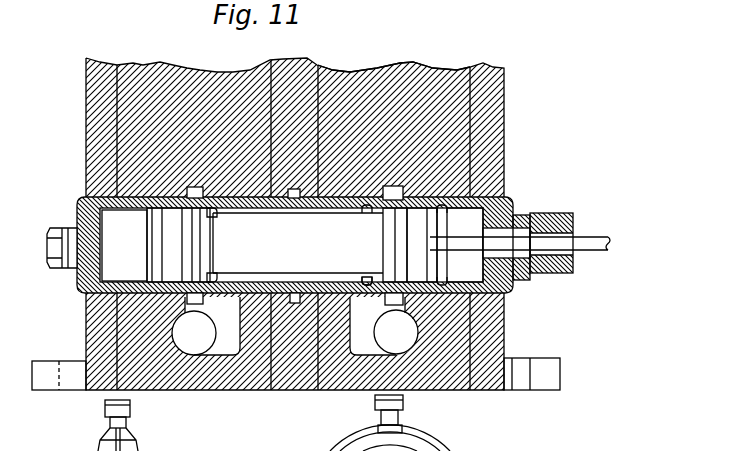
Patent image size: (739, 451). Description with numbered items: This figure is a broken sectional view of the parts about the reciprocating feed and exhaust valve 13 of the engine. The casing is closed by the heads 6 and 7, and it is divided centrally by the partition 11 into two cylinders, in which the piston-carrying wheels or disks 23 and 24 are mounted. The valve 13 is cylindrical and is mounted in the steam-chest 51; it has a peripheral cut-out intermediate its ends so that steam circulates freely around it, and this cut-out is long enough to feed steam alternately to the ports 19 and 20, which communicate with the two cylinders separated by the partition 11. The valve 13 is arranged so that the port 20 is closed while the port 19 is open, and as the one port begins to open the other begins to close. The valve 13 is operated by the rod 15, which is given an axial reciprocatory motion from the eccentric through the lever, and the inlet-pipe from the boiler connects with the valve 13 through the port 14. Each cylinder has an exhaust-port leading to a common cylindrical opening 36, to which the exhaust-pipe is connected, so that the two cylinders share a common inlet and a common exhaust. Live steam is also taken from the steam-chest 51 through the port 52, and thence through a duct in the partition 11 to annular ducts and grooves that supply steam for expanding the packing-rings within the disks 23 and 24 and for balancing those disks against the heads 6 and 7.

The head 6 is at (86, 100).
The head 7 is at (497, 96).
The piston-carrying disk 24 is at (146, 62).
The partition 11 is at (308, 60).
The piston-carrying disk 23 is at (441, 67).
The port 52 is at (300, 190).
The port 19 is at (398, 191).
The port 20 is at (190, 194).
The rod 15 is at (592, 251).
The valve 13 is at (367, 242).
The steam-chest 51 is at (362, 288).
The port 14 is at (202, 342).
The cylindrical opening 36 is at (410, 338).